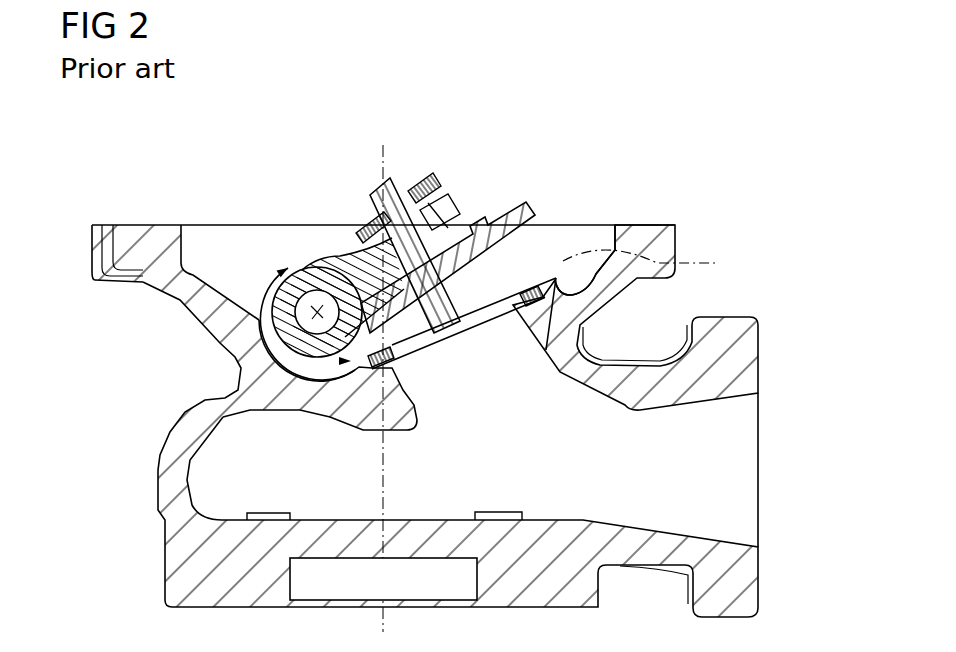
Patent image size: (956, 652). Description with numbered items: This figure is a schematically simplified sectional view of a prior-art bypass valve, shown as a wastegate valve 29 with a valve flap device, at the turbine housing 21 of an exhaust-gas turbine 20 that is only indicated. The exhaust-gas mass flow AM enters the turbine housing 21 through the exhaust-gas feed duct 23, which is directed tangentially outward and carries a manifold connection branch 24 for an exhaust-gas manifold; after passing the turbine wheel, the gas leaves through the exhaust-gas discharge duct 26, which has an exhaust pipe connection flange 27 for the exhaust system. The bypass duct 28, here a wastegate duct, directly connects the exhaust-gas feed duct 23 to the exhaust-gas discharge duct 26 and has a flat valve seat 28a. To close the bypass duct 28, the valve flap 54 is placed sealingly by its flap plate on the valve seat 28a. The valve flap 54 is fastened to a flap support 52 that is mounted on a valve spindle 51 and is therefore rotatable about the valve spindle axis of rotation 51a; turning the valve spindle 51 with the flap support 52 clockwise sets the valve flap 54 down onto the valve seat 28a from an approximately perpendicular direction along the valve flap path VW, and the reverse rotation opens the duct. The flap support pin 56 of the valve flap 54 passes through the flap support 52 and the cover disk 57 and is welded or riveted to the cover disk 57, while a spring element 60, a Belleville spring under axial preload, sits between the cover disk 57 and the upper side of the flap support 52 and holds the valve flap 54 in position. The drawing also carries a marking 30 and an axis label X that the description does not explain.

The exhaust-gas turbine 20 is at (117, 561).
The turbine housing 21 is at (163, 482).
The exhaust-gas feed duct 23 is at (738, 423).
The manifold connection branch 24 is at (738, 352).
The exhaust-gas discharge duct 26 is at (218, 243).
The exhaust pipe connection flange 27 is at (668, 237).
The bypass duct 28 is at (490, 360).
The valve seat 28a is at (510, 308).
The wastegate valve 29 is at (447, 362).
The pivot tab of lever 30 is at (368, 368).
The valve spindle 51 is at (322, 328).
The valve spindle axis of rotation 51a is at (330, 307).
The flap support 52 is at (327, 288).
The valve flap 54 is at (497, 187).
The flap support pin 56 is at (386, 207).
The cover disk 57 is at (411, 178).
The spring element 60 is at (446, 185).
The valve flap path VW is at (450, 294).
The exhaust-gas mass flow AM is at (562, 176).
The axis X is at (650, 256).